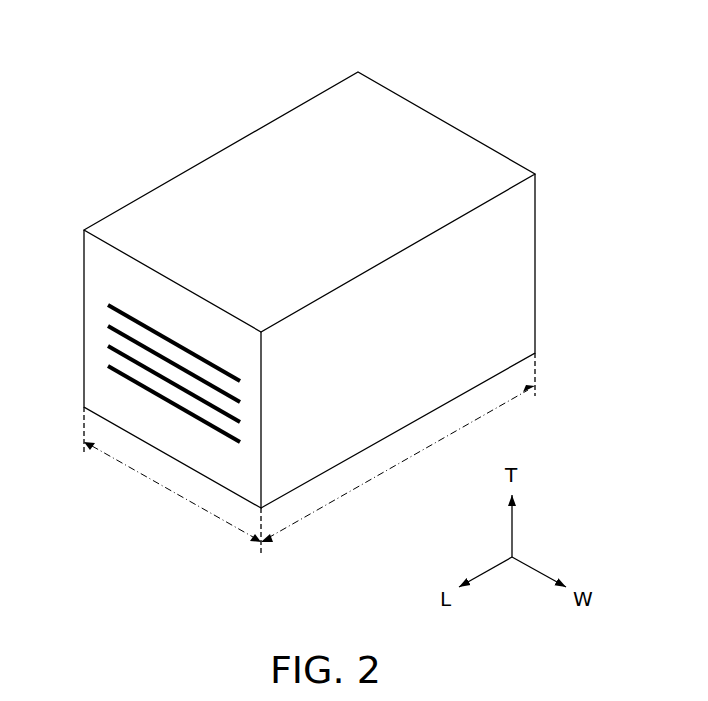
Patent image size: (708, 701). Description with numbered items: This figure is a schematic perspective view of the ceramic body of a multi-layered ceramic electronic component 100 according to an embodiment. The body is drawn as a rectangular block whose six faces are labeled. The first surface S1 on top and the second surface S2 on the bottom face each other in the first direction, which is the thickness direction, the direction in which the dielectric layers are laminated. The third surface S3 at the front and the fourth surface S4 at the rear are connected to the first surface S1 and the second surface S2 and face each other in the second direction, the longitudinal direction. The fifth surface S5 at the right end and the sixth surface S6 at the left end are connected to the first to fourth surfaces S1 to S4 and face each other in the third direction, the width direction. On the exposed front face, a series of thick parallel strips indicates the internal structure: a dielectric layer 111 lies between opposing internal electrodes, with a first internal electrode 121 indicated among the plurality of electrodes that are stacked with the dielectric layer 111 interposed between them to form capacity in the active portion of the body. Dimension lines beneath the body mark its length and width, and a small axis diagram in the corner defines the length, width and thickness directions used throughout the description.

The multi-layered ceramic electronic component 100 is at (109, 43).
The first surface S1 is at (312, 136).
The second surface S2 is at (318, 454).
The third surface S3 is at (170, 426).
The fourth surface S4 is at (430, 148).
The fifth surface S5 is at (510, 278).
The sixth surface S6 is at (156, 221).
The dielectric layer 111 is at (113, 320).
The first internal electrode 121 is at (118, 306).